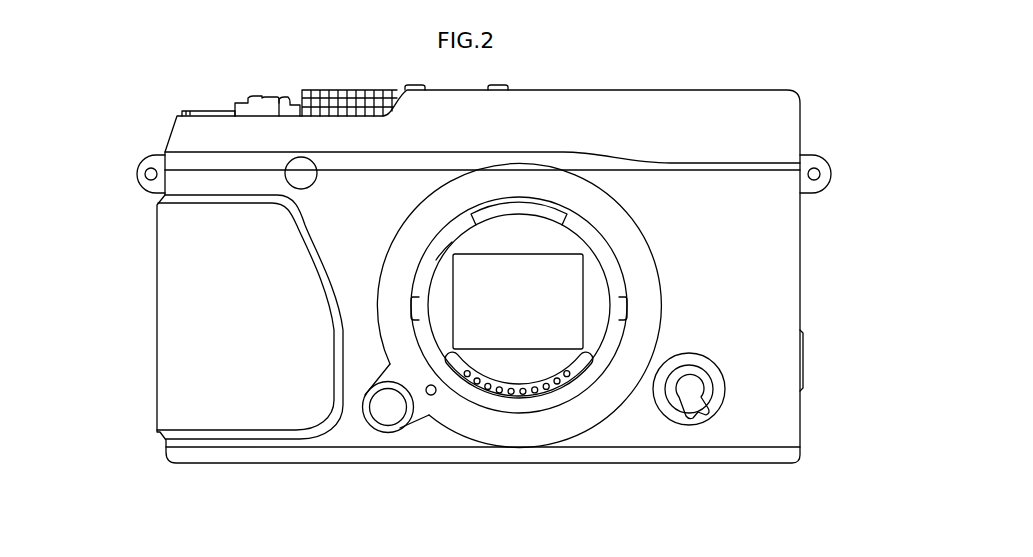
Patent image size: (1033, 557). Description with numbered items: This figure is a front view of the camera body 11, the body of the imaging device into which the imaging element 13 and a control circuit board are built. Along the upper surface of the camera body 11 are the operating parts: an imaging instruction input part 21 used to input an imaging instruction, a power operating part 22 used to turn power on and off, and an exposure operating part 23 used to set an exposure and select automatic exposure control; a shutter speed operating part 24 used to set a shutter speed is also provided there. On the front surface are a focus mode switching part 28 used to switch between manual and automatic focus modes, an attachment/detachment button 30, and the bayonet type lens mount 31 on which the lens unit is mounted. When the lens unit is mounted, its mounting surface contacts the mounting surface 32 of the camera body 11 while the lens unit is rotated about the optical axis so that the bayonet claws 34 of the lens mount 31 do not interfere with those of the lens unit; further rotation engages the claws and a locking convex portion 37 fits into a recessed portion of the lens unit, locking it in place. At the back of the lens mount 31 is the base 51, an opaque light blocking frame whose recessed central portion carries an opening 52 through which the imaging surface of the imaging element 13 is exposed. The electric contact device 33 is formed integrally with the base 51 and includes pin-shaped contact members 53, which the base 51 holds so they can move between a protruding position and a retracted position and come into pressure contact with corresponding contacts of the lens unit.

The camera body 11 is at (128, 92).
The imaging element 13 is at (557, 298).
The imaging instruction input part 21 is at (268, 97).
The power operating part 22 is at (284, 99).
The exposure operating part 23 is at (186, 111).
The shutter speed dial 24 is at (352, 90).
The focus mode switching part 28 is at (688, 392).
The attachment/detachment button 30 is at (388, 407).
The lens mount 31 is at (518, 428).
The mounting surface 32 is at (480, 423).
The electric contact device 33 is at (549, 396).
The bayonet claws 34 is at (530, 205).
The locking convex portion 37 is at (431, 395).
The base 51 is at (473, 238).
The opening 52 is at (453, 275).
The contact members 53 is at (557, 378).